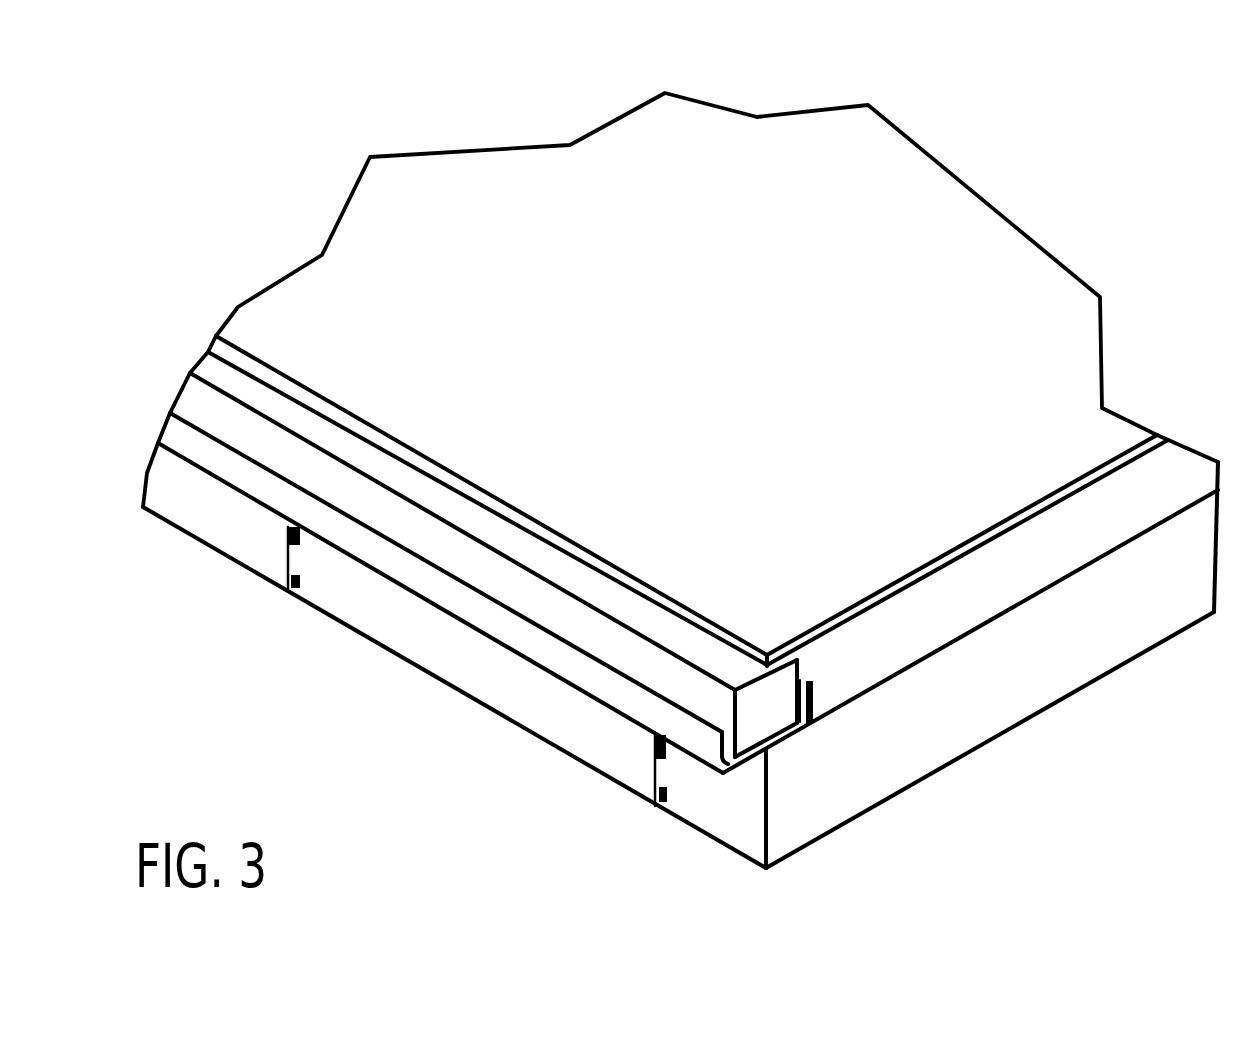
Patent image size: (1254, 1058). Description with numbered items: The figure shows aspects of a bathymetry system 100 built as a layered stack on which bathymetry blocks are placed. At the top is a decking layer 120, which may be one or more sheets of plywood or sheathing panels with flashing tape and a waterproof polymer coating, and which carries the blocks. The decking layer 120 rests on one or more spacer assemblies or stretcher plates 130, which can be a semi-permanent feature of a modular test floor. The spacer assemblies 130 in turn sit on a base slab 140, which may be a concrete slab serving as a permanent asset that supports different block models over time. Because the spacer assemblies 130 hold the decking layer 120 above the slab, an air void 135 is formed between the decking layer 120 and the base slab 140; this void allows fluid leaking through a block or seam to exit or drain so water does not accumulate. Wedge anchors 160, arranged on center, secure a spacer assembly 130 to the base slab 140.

The bathymetry system 100 is at (200, 153).
The decking layer 120 is at (757, 337).
The spacer assembly or stretcher plate 130 is at (714, 790).
The air void 135 is at (925, 622).
The base slab 140 is at (1095, 651).
The wedge anchor 160 is at (252, 551).